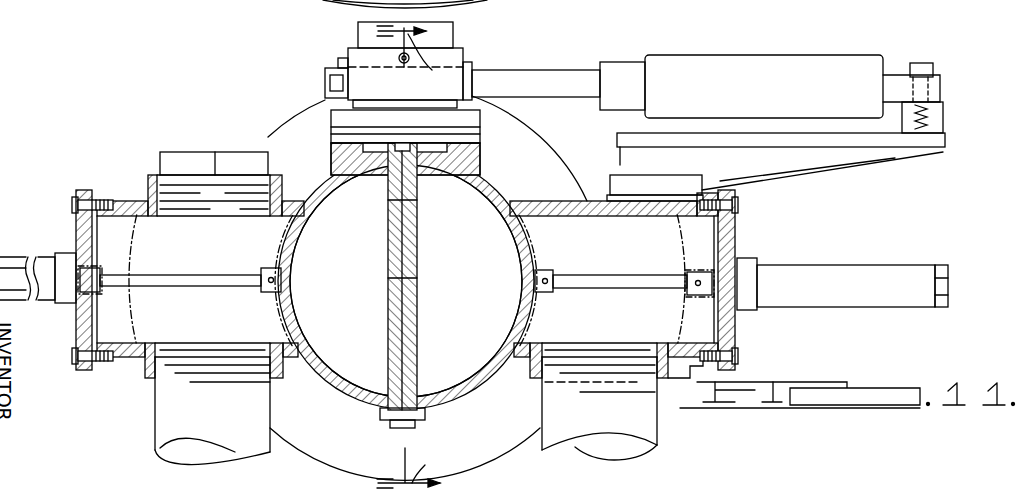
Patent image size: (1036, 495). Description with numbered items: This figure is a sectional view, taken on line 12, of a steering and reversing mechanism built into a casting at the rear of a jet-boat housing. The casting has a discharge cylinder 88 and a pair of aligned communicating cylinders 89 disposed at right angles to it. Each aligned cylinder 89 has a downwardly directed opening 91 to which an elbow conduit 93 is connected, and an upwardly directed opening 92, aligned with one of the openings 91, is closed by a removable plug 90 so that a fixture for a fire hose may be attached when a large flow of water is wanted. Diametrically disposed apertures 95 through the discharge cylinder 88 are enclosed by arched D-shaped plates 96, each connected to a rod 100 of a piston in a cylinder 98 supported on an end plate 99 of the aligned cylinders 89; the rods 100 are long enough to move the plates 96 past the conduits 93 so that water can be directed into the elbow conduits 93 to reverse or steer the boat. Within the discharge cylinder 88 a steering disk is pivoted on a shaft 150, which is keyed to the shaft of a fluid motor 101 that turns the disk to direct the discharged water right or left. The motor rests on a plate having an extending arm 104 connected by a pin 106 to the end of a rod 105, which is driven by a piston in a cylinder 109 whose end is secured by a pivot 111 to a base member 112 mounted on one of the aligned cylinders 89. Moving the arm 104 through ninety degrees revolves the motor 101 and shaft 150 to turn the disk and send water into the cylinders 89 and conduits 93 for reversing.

The section line indicator 12 is at (415, 257).
The discharge cylinder 88 is at (490, 168).
The aligned communicating cylinders 89 is at (128, 182).
The plug 90 is at (197, 152).
The downwardly directed opening 91 is at (165, 368).
The upwardly directed opening 92 is at (178, 155).
The elbow conduit 93 is at (170, 417).
The diametrically disposed apertures 95 is at (303, 232).
The arched D-shaped plate 96 is at (290, 292).
The cylinder 98 is at (23, 253).
The end plate 99 is at (77, 227).
The rod 100 is at (187, 272).
The fluid motor 101 is at (460, 60).
The arm 104 is at (327, 76).
The rod 105 is at (520, 80).
The pin 106 is at (347, 55).
The cylinder 109 is at (752, 58).
The pivot 111 is at (925, 62).
The base member 112 is at (890, 154).
The shaft 150 is at (415, 252).